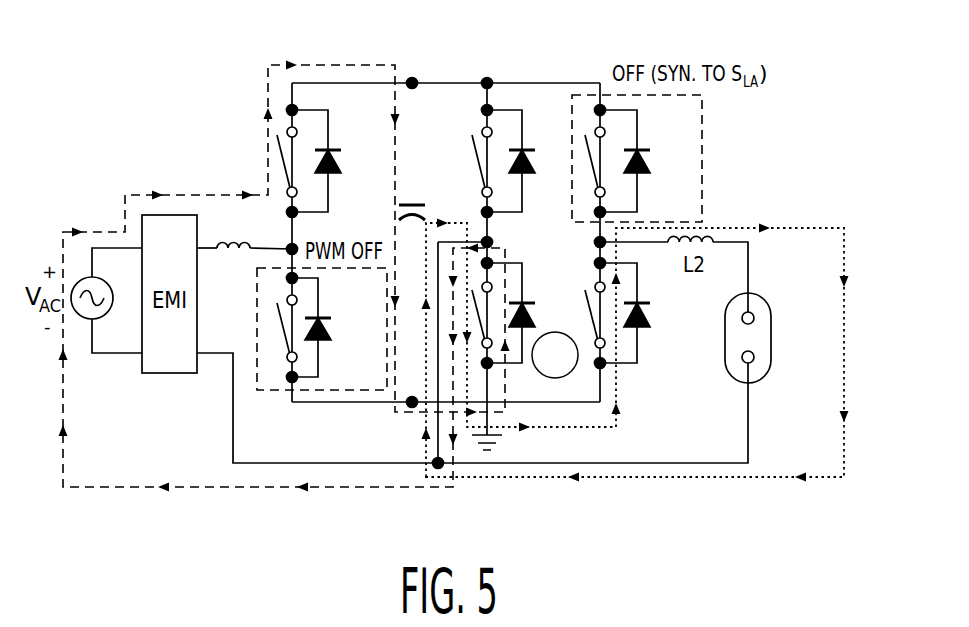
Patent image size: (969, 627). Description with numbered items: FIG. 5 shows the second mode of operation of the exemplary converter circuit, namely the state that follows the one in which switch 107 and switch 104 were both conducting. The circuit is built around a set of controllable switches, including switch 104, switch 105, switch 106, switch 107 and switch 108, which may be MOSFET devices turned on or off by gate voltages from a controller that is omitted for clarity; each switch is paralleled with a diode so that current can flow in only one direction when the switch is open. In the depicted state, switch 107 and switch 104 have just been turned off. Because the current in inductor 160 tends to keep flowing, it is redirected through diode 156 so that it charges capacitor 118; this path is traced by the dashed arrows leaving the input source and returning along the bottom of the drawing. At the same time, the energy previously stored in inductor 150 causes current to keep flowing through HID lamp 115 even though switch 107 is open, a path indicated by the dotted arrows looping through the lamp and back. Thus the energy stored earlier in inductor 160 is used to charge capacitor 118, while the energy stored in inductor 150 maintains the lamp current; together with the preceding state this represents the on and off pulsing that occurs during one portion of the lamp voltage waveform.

The switch 104 is at (318, 357).
The switch 105 is at (522, 140).
The switch 106 is at (524, 289).
The switch 107 is at (637, 129).
The switch 108 is at (637, 286).
The HID lamp 115 is at (730, 368).
The capacitor 118 is at (398, 205).
The inductor 150 is at (712, 228).
The diode 156 is at (328, 140).
The inductor 160 is at (225, 244).